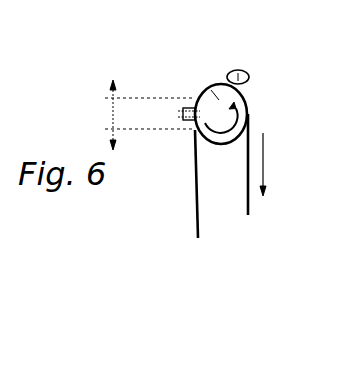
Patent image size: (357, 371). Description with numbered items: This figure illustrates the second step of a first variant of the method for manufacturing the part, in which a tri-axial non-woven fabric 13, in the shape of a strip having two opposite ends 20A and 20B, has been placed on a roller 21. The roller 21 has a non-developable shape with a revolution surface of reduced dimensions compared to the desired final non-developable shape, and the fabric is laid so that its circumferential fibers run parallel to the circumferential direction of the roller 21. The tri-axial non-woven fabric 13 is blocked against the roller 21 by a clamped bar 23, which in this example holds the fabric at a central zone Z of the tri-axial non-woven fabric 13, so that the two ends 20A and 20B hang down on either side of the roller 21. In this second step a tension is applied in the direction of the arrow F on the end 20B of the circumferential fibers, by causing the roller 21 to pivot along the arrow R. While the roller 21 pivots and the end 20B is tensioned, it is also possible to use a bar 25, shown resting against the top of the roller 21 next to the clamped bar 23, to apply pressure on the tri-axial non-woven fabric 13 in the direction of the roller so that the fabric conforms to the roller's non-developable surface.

The tri-axial non-woven fabric 13 is at (225, 196).
The end 20A is at (193, 228).
The end 20B is at (251, 206).
The roller 21 is at (212, 84).
The clamped bar 23 is at (182, 108).
The bar 25 is at (237, 70).
The arrow R is at (238, 112).
The arrow F is at (264, 160).
The central zone Z is at (112, 112).